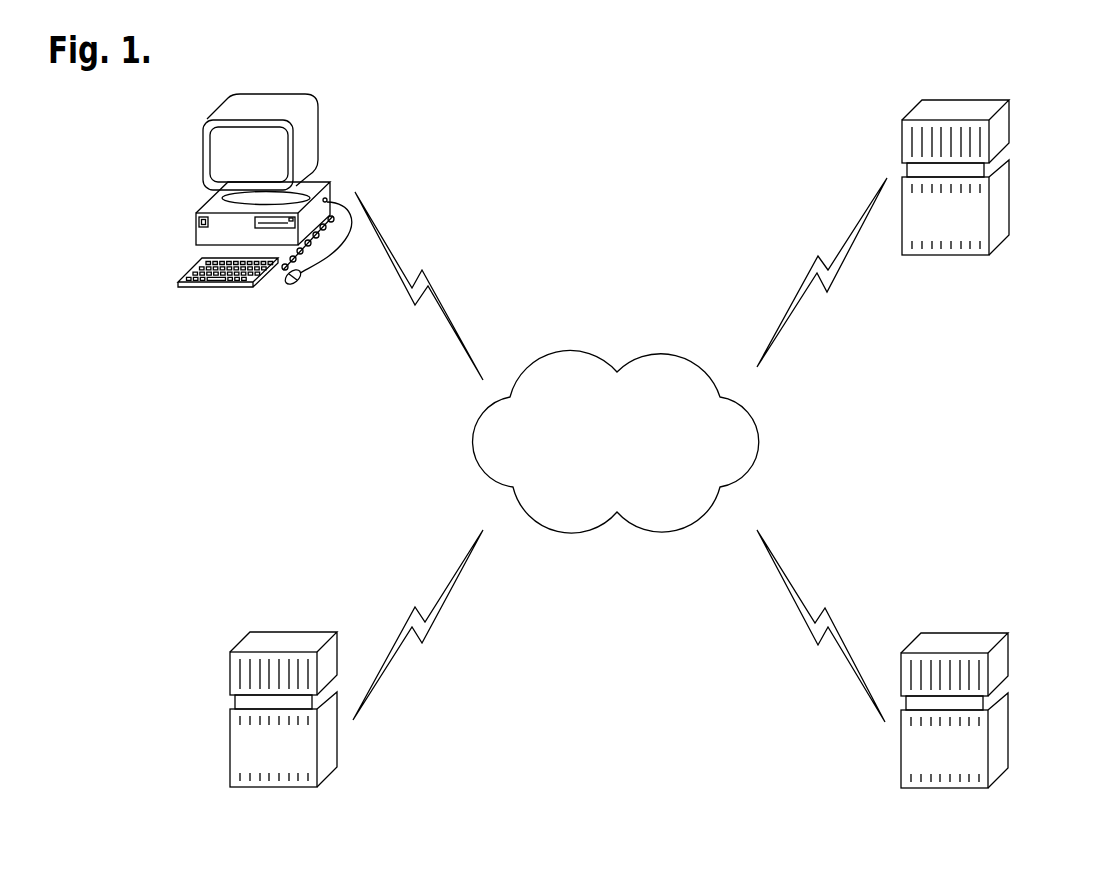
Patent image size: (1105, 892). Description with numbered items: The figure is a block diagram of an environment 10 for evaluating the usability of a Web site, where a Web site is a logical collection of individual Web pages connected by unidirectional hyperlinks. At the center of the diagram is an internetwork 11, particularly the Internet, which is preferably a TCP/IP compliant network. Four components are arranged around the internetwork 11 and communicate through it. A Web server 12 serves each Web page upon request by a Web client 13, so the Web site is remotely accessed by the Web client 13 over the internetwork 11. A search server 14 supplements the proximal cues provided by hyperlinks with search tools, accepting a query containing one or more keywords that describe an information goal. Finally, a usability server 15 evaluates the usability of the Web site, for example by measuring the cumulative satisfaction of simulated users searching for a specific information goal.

The environment 10 is at (137, 127).
The internetwork 11 is at (763, 442).
The Web server 12 is at (1011, 128).
The Web client 13 is at (203, 164).
The search server 14 is at (230, 675).
The usability server 15 is at (1010, 662).